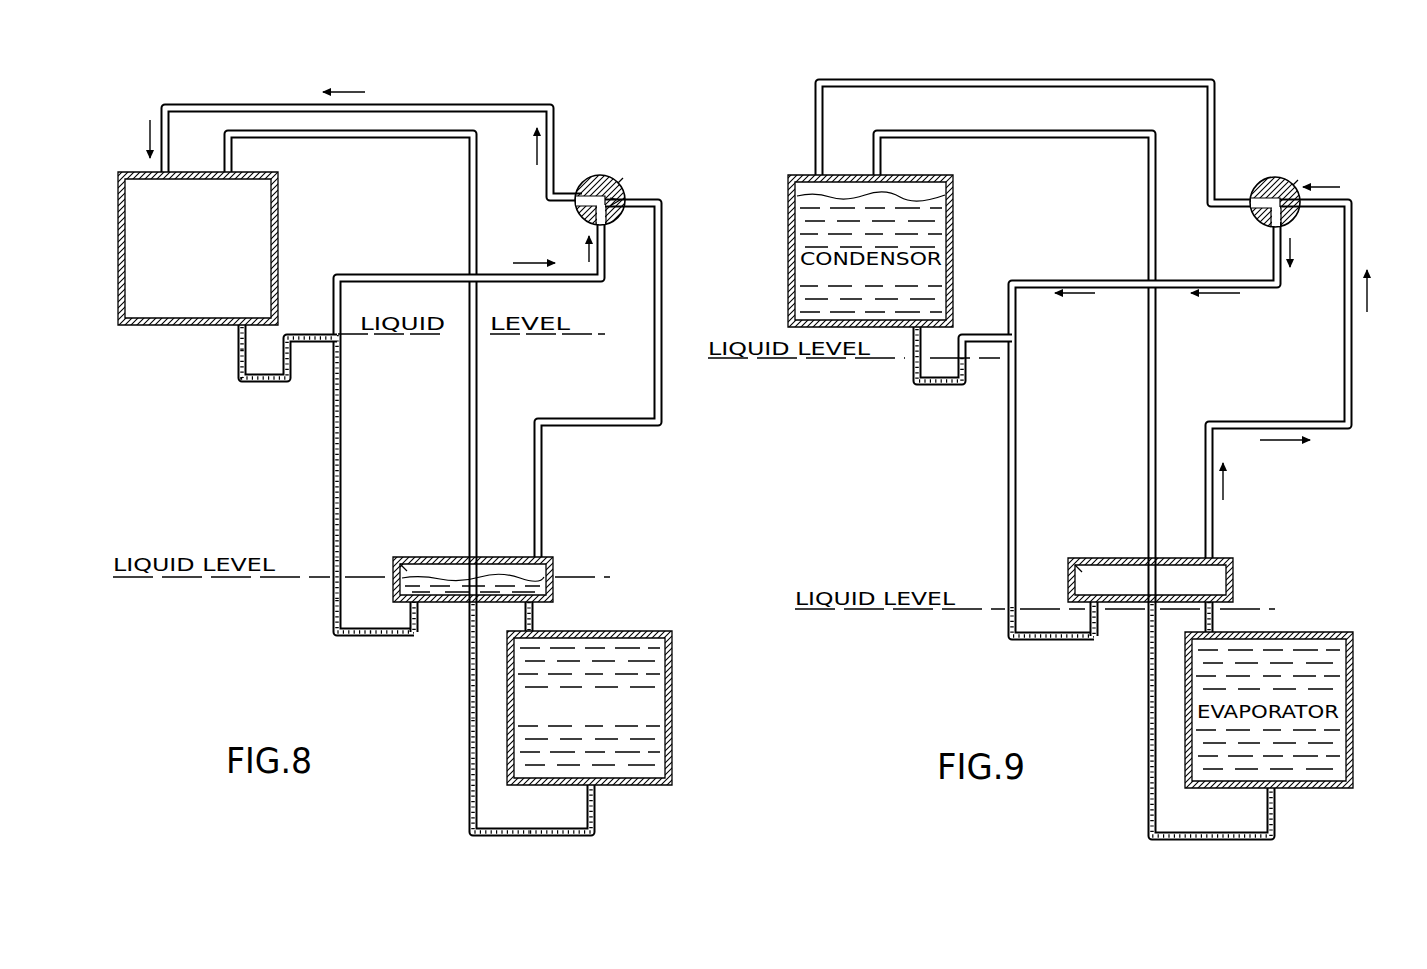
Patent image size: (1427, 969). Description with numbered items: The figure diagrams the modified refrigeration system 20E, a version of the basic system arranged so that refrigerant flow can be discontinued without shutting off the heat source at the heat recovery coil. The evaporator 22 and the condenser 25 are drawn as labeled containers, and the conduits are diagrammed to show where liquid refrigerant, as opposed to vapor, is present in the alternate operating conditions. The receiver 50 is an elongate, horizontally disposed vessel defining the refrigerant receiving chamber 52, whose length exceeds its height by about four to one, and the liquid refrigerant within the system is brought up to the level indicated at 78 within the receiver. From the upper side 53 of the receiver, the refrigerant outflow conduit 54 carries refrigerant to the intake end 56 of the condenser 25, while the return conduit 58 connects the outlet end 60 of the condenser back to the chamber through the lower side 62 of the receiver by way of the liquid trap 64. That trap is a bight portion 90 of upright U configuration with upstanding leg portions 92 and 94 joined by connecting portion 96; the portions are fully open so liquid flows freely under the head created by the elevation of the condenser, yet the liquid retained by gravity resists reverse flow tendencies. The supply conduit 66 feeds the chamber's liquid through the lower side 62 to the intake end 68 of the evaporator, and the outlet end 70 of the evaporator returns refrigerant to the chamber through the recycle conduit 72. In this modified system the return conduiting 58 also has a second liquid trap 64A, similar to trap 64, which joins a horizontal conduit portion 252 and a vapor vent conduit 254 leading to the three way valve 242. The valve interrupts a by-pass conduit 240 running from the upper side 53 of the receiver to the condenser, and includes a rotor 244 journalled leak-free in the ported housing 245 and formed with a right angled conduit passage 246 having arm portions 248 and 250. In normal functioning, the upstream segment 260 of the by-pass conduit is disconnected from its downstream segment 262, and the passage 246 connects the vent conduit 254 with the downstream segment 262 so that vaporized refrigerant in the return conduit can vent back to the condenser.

In FIG. 8, the refrigeration system 20E is at (649, 166).
In FIG. 9, the refrigeration system 20E is at (1312, 147).
In FIG. 8, the evaporator 22 is at (622, 686).
In FIG. 8, the condenser 25 is at (288, 216).
In FIG. 8, the receiver 50 is at (501, 557).
In FIG. 9, the receiver 50 is at (1183, 552).
In FIG. 8, the refrigerant receiving chamber 52 is at (407, 568).
In FIG. 9, the refrigerant receiving chamber 52 is at (1102, 560).
In FIG. 8, the upper side of the receiver 53 is at (437, 557).
In FIG. 9, the upper side of the receiver 53 is at (1180, 557).
In FIG. 8, the refrigerant outflow conduit 54 is at (478, 400).
In FIG. 9, the refrigerant outflow conduit 54 is at (1160, 395).
In FIG. 8, the intake end of the condenser 56 is at (236, 170).
In FIG. 8, the return conduit 58 is at (343, 445).
In FIG. 8, the outlet end of the condenser 60 is at (237, 332).
In FIG. 8, the lower side of the receiver 62 is at (450, 610).
In FIG. 9, the lower side of the receiver 62 is at (1170, 612).
In FIG. 8, the liquid trap 64 is at (330, 632).
In FIG. 9, the liquid trap 64 is at (1009, 621).
In FIG. 8, the second liquid trap 64A is at (232, 384).
In FIG. 8, the supply conduit 66 is at (467, 770).
In FIG. 8, the intake end of the evaporator 68 is at (597, 798).
In FIG. 8, the outlet end of the evaporator 70 is at (536, 630).
In FIG. 8, the recycle conduit 72 is at (534, 617).
In FIG. 9, the recycle conduit 72 is at (1217, 628).
In FIG. 8, the liquid level 78 is at (503, 583).
In FIG. 8, the bight portion 90 is at (338, 645).
In FIG. 9, the bight portion 90 is at (1008, 642).
In FIG. 8, the upstanding leg portion 92 is at (345, 600).
In FIG. 9, the upstanding leg portion 92 is at (1017, 613).
In FIG. 8, the upstanding leg portion 94 is at (425, 615).
In FIG. 9, the upstanding leg portion 94 is at (1100, 620).
In FIG. 8, the connecting portion 96 is at (372, 640).
In FIG. 9, the connecting portion 96 is at (1047, 645).
In FIG. 8, the by-pass conduit 240 is at (664, 235).
In FIG. 8, the three way valve 242 is at (649, 178).
In FIG. 9, the three way valve 242 is at (1312, 155).
In FIG. 8, the rotor 244 is at (600, 176).
In FIG. 9, the rotor 244 is at (1262, 180).
In FIG. 8, the valve housing 245 is at (622, 182).
In FIG. 9, the valve housing 245 is at (1292, 182).
In FIG. 8, the conduit passage 246 is at (628, 195).
In FIG. 8, the arm portion 248 is at (586, 183).
In FIG. 8, the arm portion 250 is at (612, 222).
In FIG. 8, the horizontal conduit portion 252 is at (305, 345).
In FIG. 8, the vapor vent conduit 254 is at (420, 274).
In FIG. 9, the vapor vent conduit 254 is at (1180, 280).
In FIG. 8, the upstream segment of bypass conduit 260 is at (664, 410).
In FIG. 9, the upstream segment of bypass conduit 260 is at (1353, 392).
In FIG. 8, the downstream segment of bypass conduit 262 is at (480, 105).